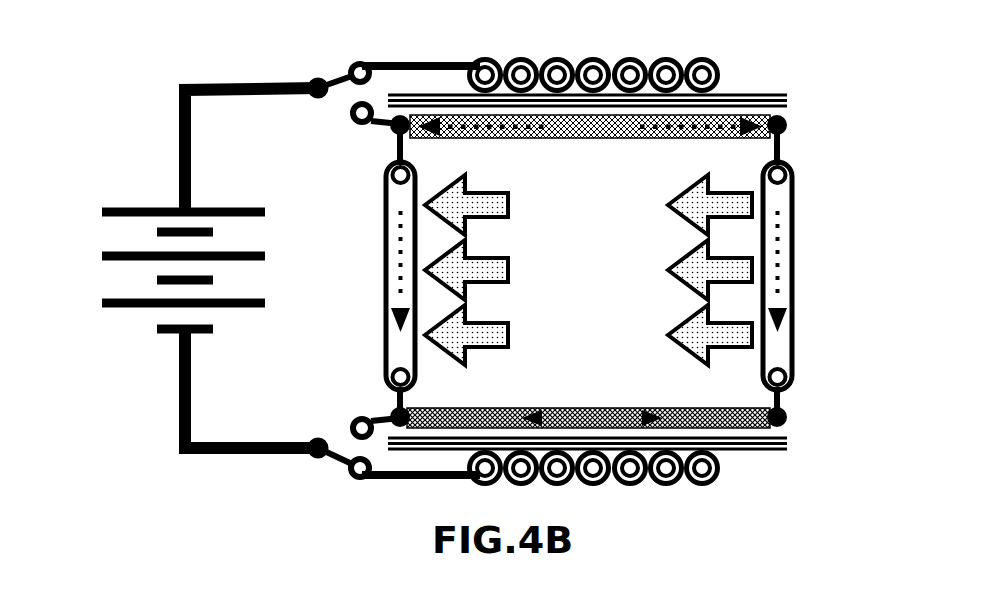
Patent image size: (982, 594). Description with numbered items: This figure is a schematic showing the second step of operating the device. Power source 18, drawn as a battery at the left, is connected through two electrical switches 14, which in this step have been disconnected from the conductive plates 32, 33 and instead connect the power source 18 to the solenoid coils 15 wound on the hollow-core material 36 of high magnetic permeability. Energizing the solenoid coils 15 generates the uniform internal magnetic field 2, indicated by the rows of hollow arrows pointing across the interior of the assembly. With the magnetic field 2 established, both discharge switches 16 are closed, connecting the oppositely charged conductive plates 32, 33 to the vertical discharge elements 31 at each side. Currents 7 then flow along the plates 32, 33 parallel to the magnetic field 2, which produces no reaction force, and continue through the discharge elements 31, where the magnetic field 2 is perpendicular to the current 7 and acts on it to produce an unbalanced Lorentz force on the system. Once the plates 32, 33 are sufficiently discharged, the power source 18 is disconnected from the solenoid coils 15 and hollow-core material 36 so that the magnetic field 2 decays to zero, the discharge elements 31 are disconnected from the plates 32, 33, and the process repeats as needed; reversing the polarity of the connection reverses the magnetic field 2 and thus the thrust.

The uniform internal magnetic field 2 is at (508, 206).
The discharge current 7 is at (391, 284).
The electrical switch 14 is at (318, 90).
The solenoid coil 15 is at (704, 60).
The discharge switch 16 is at (397, 128).
The power source 18 is at (132, 207).
The discharge element 31 is at (388, 200).
The conductive plate 32 is at (612, 408).
The conductive plate 33 is at (563, 140).
The hollow-core material 36 is at (788, 100).